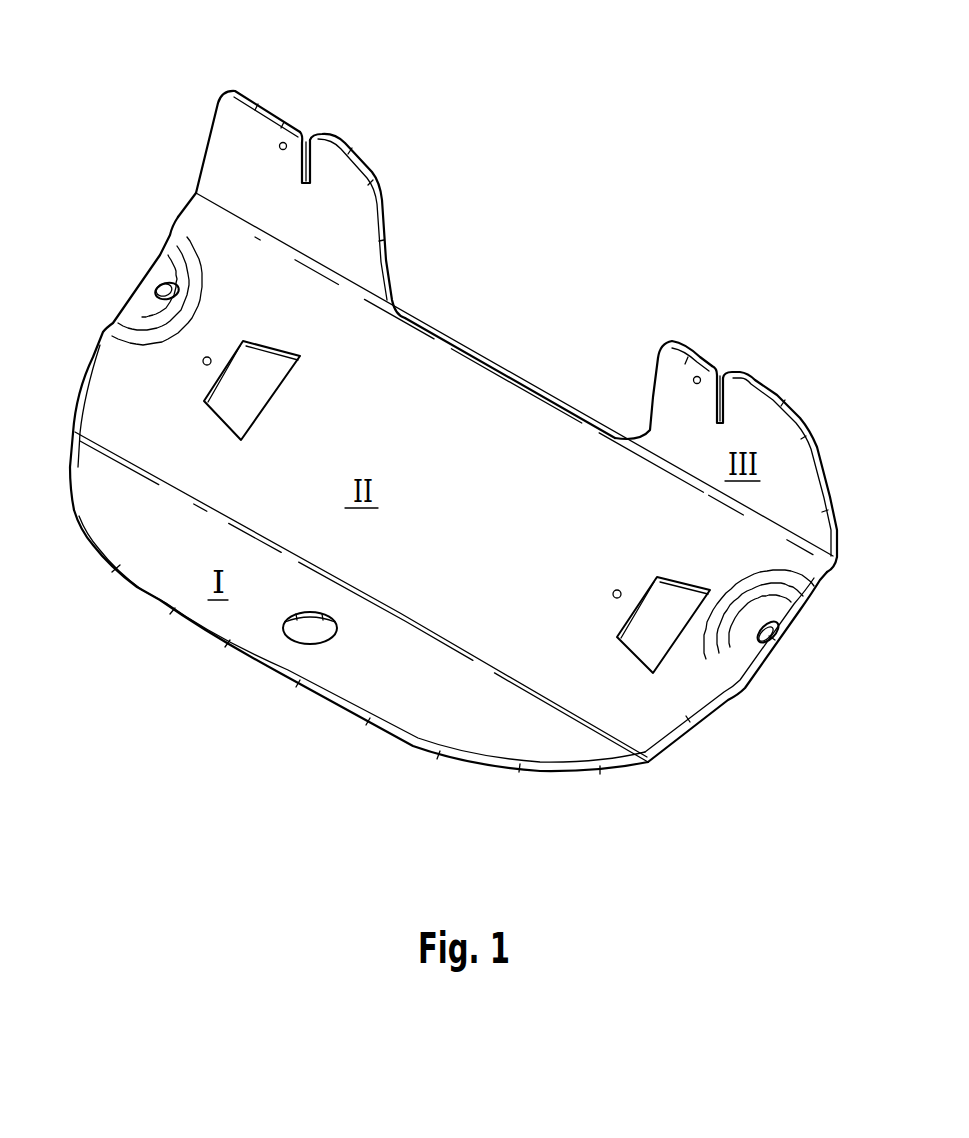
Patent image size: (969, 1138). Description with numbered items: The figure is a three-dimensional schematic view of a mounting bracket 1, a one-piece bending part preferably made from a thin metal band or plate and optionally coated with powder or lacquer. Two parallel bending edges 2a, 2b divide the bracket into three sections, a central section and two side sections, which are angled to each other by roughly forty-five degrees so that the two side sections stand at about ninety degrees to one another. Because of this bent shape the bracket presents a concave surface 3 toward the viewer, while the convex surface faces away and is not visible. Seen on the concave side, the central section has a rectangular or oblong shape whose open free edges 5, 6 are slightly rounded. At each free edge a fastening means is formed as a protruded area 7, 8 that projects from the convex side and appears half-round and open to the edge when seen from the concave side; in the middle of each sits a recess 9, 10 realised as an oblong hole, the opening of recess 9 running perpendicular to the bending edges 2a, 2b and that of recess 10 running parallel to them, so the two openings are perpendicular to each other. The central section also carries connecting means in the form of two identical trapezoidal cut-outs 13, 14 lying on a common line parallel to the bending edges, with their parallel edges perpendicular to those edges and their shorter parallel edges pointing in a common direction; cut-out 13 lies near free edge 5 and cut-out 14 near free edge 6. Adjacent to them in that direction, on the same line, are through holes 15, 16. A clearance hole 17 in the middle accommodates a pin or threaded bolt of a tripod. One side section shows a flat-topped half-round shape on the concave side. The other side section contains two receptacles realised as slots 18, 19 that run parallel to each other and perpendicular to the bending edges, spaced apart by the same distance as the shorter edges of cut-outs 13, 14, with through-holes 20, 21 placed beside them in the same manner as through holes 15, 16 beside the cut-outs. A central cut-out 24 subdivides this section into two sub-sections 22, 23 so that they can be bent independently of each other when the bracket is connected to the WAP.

The mounting bracket 1 is at (550, 194).
The bending edge 2a is at (197, 194).
The bending edge 2b is at (75, 432).
The concave surface 3 is at (163, 563).
The free edge 5 is at (836, 595).
The free edge 6 is at (90, 350).
The protruded area 7 is at (790, 620).
The protruded area 8 is at (140, 307).
The recess 9 is at (770, 642).
The recess 10 is at (163, 287).
The cut-out 13 is at (675, 597).
The cut-out 14 is at (253, 390).
The through hole 15 is at (613, 594).
The through hole 16 is at (203, 361).
The clearance hole 17 is at (307, 630).
The slot 18 is at (720, 370).
The slot 19 is at (307, 140).
The through-hole 20 is at (696, 377).
The through-hole 21 is at (283, 142).
The sub-section 22 is at (770, 425).
The sub-section 23 is at (350, 187).
The central cut-out 24 is at (483, 338).